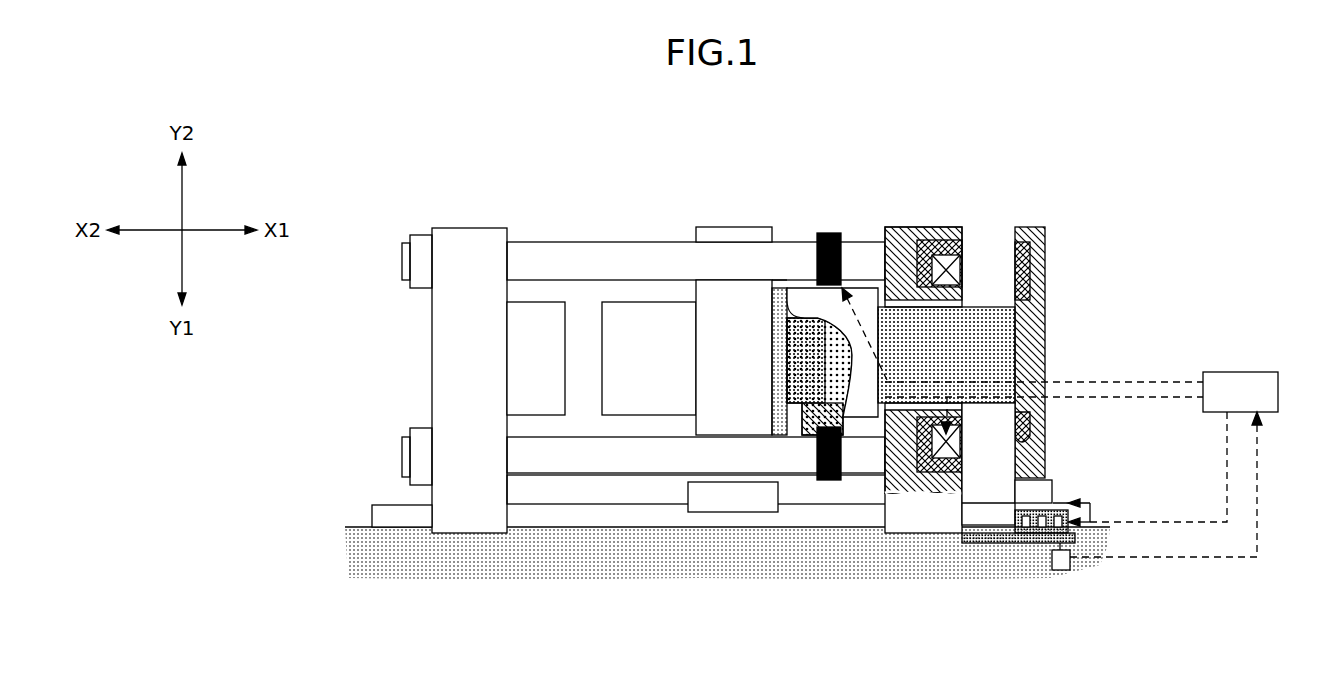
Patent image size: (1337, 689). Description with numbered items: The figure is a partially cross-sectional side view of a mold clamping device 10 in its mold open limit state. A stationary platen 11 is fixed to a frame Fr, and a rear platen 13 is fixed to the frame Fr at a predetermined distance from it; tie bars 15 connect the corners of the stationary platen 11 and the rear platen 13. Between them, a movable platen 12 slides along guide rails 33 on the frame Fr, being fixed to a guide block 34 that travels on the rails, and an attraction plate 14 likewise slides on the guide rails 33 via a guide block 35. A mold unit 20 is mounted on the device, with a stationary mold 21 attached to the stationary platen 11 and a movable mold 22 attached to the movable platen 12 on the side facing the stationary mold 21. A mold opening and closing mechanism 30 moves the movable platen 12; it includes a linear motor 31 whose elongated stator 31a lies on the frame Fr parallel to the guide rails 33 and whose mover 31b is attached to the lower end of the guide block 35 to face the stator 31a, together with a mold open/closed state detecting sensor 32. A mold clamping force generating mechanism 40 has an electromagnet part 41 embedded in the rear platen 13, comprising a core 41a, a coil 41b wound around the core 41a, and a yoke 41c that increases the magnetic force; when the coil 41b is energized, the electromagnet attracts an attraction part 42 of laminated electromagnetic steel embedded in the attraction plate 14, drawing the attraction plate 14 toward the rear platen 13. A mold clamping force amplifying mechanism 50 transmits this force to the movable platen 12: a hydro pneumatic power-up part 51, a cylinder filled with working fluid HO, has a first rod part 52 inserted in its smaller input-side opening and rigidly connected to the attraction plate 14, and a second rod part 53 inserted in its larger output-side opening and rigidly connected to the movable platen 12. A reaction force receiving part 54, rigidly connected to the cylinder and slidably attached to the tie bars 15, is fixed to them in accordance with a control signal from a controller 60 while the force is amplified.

The mold clamping device 10 is at (1108, 142).
The stationary platen 11 is at (482, 228).
The movable platen 12 is at (745, 227).
The rear platen 13 is at (933, 227).
The attraction plate 14 is at (1033, 227).
The tie bars 15 is at (635, 242).
The mold unit 20 is at (529, 399).
The stationary mold 21 is at (545, 302).
The movable mold 22 is at (640, 415).
The mold opening and closing mechanism 30 is at (1082, 500).
The linear motor 31 is at (1018, 589).
The stator 31a is at (968, 547).
The mover 31b is at (1018, 540).
The mold open/closed state detecting sensor 32 is at (1072, 568).
The guide rails 33 is at (395, 505).
The guide block 34 is at (708, 512).
The guide block 35 is at (1053, 497).
The mold clamping force generating mechanism 40 is at (990, 327).
The electromagnet part 41 is at (877, 305).
The core 41a is at (890, 258).
The coil 41b is at (938, 250).
The yoke 41c is at (929, 311).
The attraction part 42 is at (1043, 285).
The mold clamping force amplifying mechanism 50 is at (805, 224).
The hydro pneumatic power-up part 51 is at (865, 417).
The first rod part 52 is at (995, 240).
The second rod part 53 is at (770, 430).
The reaction force receiving part 54 is at (830, 480).
The controller 60 is at (1255, 372).
The working fluid HO is at (810, 370).
The frame Fr is at (558, 540).